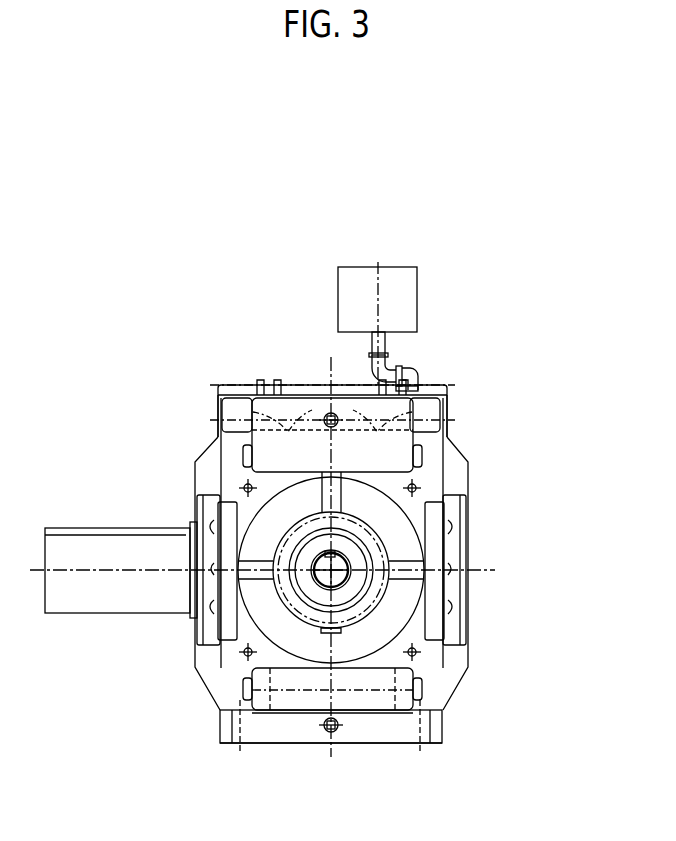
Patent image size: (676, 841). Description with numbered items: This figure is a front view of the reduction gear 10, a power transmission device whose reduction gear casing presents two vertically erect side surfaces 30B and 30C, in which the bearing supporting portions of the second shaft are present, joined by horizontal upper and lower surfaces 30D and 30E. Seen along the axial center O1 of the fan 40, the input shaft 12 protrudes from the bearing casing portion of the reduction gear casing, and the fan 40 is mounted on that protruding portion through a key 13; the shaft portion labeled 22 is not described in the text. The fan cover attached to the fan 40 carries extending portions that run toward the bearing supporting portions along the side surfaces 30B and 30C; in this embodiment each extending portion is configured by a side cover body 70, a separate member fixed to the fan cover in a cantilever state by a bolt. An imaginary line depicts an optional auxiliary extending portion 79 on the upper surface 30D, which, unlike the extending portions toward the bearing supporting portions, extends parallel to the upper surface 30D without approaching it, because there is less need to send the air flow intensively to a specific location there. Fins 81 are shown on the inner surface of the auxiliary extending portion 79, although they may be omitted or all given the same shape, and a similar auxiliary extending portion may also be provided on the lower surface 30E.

The reduction gear 10 is at (445, 340).
The auxiliary extending portion 79 is at (317, 383).
The upper surface 30D is at (343, 385).
The side surface 30C is at (220, 446).
The side surface 30B is at (443, 458).
The lower surface 30E is at (343, 712).
The fan 40 is at (197, 482).
The side cover body 70 is at (470, 497).
The fins 81 is at (332, 571).
The key 13 is at (342, 547).
The input shaft 12 is at (338, 580).
The axial center O1 is at (327, 575).
The input shaft 22 is at (122, 595).